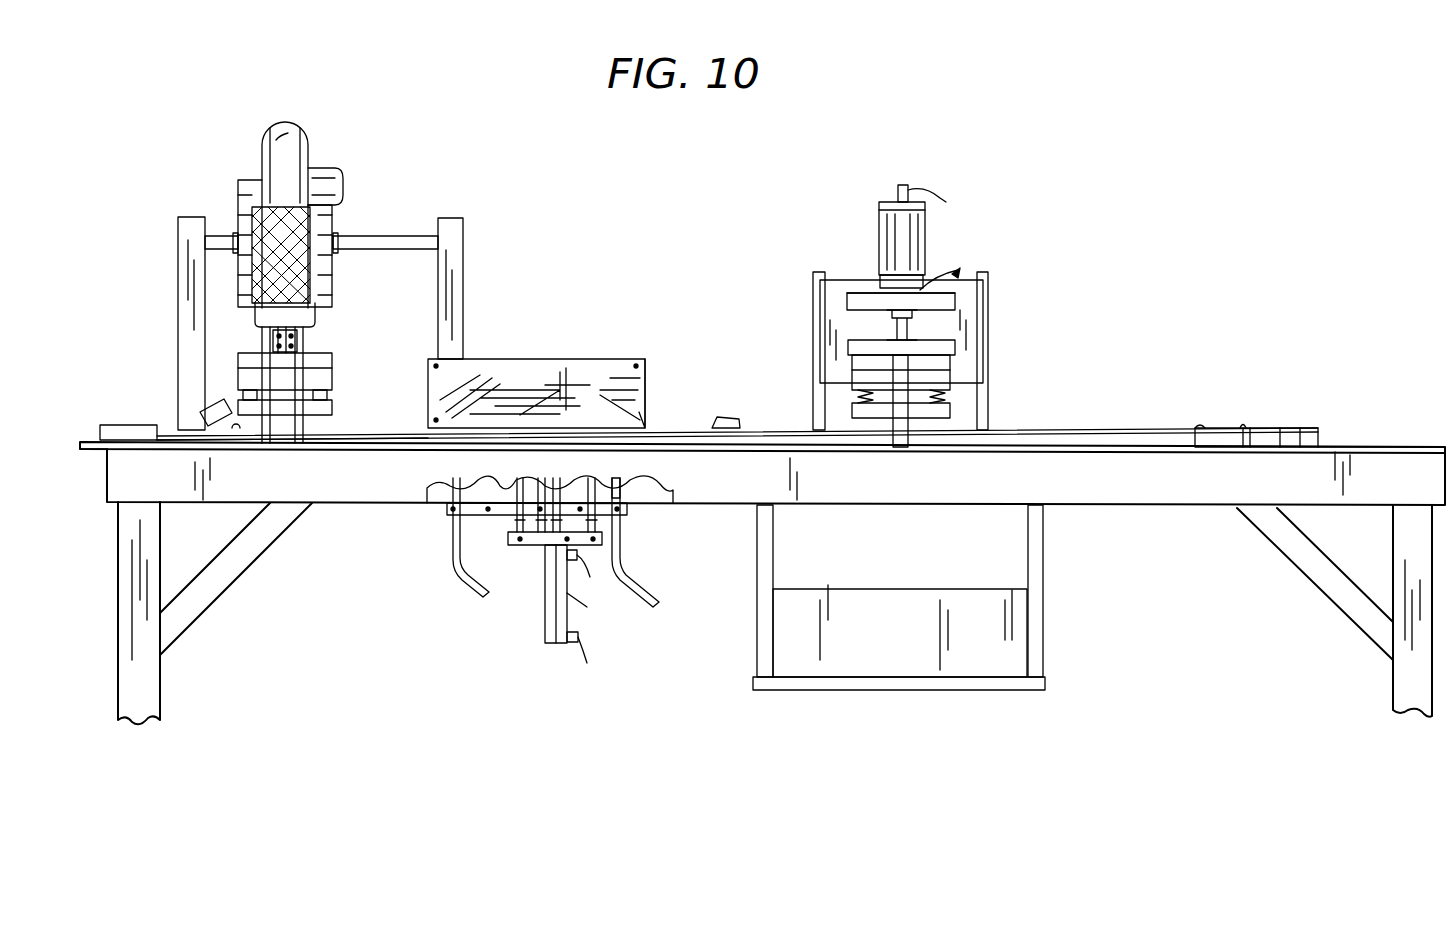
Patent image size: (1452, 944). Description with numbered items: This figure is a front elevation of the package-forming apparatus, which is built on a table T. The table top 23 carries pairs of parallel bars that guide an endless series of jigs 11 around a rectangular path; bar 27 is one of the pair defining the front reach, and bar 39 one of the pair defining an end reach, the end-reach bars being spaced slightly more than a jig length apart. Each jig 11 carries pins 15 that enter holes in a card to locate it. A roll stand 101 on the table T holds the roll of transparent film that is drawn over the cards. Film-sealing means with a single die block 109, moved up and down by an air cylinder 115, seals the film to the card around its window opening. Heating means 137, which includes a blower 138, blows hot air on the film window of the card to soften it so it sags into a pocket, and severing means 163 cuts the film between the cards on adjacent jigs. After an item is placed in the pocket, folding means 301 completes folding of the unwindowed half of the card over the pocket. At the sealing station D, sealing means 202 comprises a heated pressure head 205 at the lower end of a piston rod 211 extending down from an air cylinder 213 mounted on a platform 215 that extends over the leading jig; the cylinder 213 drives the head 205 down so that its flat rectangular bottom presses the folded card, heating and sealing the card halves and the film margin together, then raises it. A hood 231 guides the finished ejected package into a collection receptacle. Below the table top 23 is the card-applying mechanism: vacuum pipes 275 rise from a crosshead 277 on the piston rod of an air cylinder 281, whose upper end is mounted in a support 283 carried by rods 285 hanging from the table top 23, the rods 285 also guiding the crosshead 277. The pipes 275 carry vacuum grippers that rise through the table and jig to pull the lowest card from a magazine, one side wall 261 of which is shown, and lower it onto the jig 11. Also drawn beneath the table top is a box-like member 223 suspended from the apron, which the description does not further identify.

The table T is at (95, 487).
The sealing station D is at (914, 172).
The jig 11 is at (518, 360).
The pins 15 is at (652, 413).
The table top 23 is at (1418, 447).
The bar 27 is at (405, 428).
The bar 39 is at (1318, 428).
The roll stand 101 is at (463, 250).
The die block 109 is at (333, 408).
The air cylinder 115 is at (253, 213).
The heating means 137 is at (312, 114).
The blower 138 is at (260, 148).
The film-severing means 163 is at (192, 415).
The sealing means 202 is at (955, 238).
The heated pressure head 205 is at (953, 413).
The piston rod 211 is at (903, 327).
The air cylinder 213 is at (880, 237).
The platform 215 is at (847, 303).
The drawer box 223 is at (1007, 657).
The hood 231 is at (987, 277).
The side wall 261 is at (566, 373).
The vacuum pipe 275 is at (547, 490).
The crosshead 277 is at (447, 510).
The air cylinder 281 is at (570, 618).
The support 283 is at (520, 547).
The rods 285 is at (624, 492).
The folding means 301 is at (742, 416).